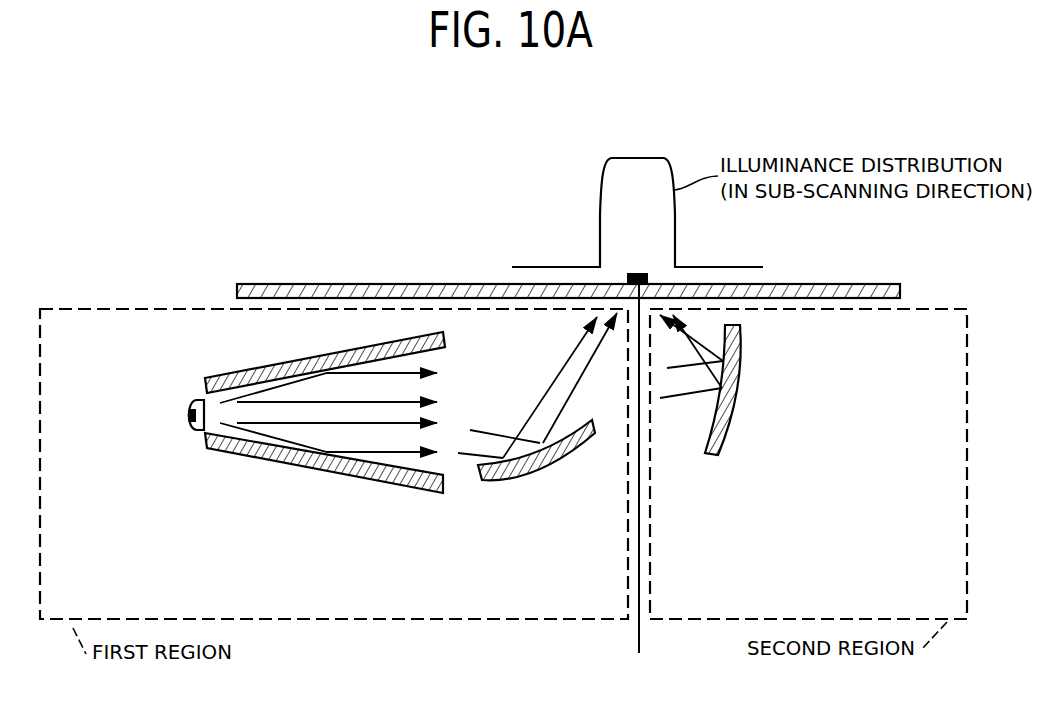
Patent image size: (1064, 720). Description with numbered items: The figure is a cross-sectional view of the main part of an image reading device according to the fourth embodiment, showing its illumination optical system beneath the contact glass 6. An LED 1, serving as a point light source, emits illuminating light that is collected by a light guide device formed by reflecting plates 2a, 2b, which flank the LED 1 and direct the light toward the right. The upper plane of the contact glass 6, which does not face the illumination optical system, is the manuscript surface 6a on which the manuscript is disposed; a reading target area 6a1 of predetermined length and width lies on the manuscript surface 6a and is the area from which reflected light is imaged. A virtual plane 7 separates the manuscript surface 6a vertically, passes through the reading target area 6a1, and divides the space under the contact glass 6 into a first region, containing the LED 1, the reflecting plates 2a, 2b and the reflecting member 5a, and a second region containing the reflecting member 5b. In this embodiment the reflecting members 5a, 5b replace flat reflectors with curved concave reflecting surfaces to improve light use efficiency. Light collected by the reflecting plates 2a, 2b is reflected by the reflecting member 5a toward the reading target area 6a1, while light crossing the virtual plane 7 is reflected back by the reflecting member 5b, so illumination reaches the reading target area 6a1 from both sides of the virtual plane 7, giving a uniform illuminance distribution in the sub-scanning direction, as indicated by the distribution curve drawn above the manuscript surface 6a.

The LED 1 is at (194, 424).
The reflecting plate 2a is at (293, 358).
The reflecting plate 2b is at (322, 477).
The reflecting member 5a is at (547, 467).
The reflecting member 5b is at (737, 390).
The contact glass 6 is at (237, 291).
The manuscript surface 6a is at (400, 283).
The reading target area 6a1 is at (650, 282).
The virtual plane 7 is at (639, 640).